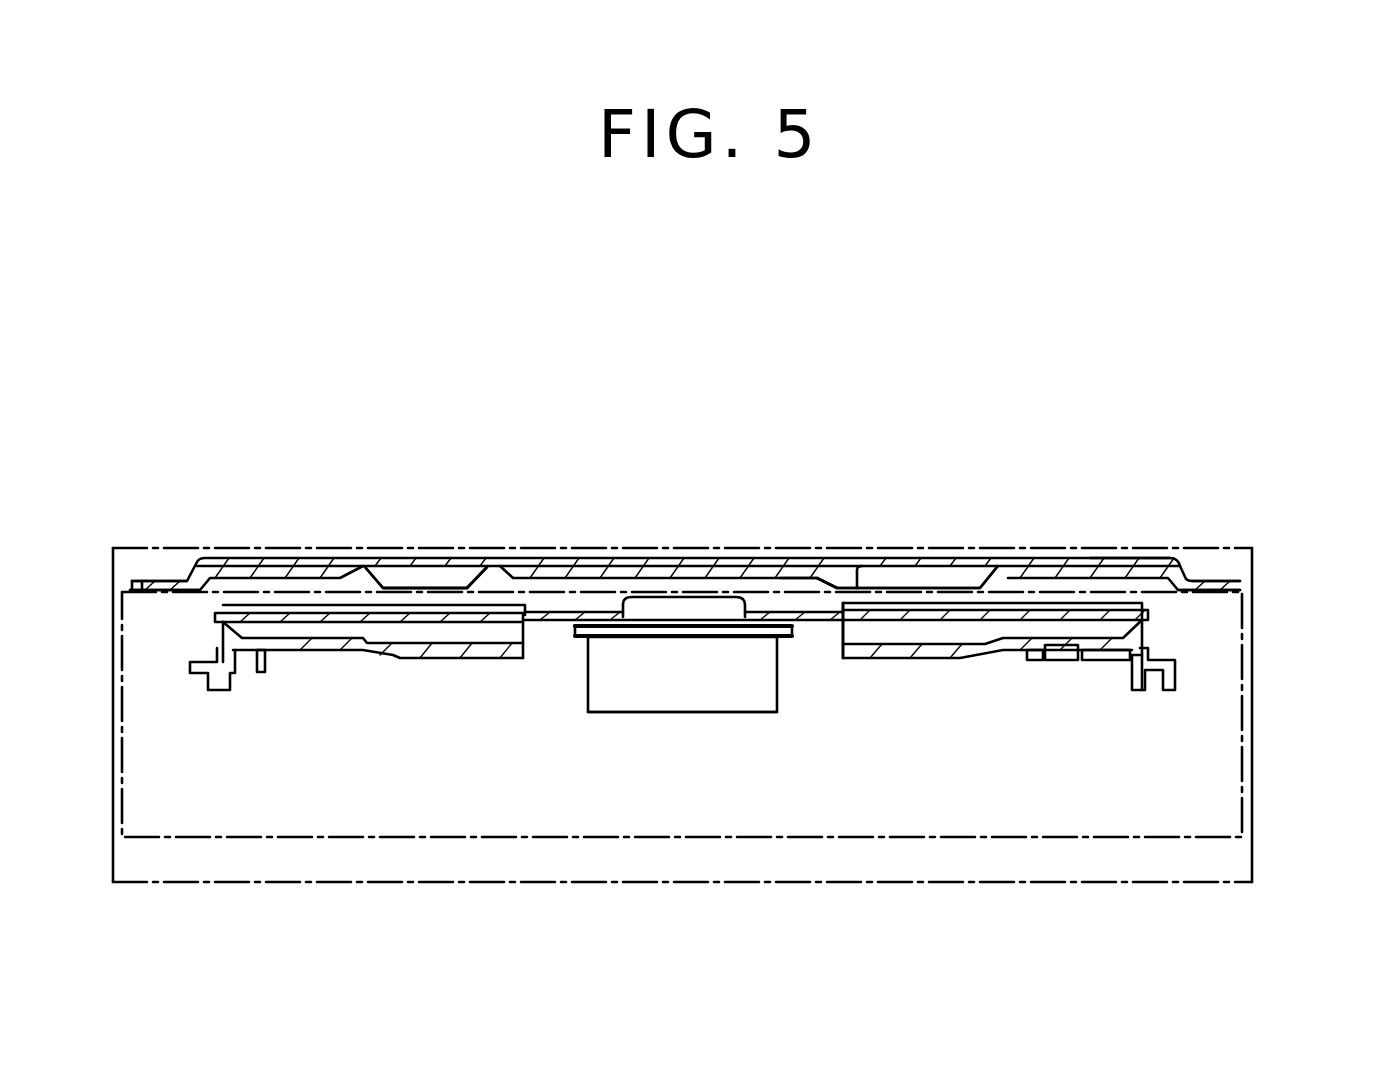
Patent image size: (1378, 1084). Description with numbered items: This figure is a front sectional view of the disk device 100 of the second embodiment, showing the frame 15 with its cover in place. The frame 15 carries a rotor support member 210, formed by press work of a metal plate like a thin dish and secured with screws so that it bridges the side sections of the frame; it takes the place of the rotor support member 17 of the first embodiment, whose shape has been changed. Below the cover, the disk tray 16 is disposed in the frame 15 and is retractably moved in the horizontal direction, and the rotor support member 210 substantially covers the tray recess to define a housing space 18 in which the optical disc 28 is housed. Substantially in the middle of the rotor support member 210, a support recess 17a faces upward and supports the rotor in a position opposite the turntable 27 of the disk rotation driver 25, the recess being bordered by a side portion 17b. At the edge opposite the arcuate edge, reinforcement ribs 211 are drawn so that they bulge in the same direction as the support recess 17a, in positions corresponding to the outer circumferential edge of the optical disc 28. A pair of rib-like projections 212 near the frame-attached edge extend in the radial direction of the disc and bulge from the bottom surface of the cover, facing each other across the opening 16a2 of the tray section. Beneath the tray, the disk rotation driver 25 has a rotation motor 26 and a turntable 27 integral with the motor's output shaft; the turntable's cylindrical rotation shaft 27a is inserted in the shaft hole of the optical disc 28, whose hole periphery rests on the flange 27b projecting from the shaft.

The disk device 100 is at (1178, 548).
The frame 15 is at (1262, 705).
The disk tray 16 is at (1105, 660).
The opening 16a2 is at (845, 648).
The rotor support member 17 is at (975, 562).
The support recess 17a is at (838, 588).
The cover plate side portion 17b is at (803, 575).
The housing space 18 is at (472, 600).
The rotor support member 210 is at (1122, 560).
The reinforcement ribs 211 is at (407, 578).
The projections 212 is at (222, 577).
The disk rotation driver 25 is at (660, 714).
The rotation motor 26 is at (728, 695).
The turntable 27 is at (795, 637).
The rotation shaft 27a is at (657, 607).
The flange 27b is at (603, 633).
The optical disc 28 is at (963, 620).